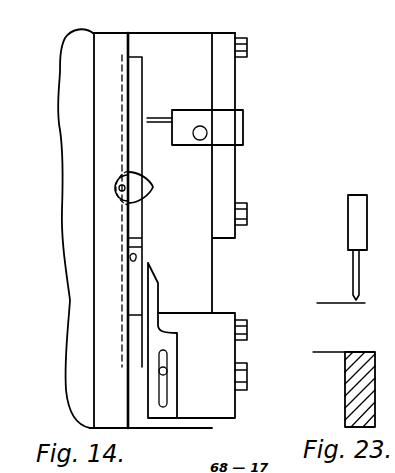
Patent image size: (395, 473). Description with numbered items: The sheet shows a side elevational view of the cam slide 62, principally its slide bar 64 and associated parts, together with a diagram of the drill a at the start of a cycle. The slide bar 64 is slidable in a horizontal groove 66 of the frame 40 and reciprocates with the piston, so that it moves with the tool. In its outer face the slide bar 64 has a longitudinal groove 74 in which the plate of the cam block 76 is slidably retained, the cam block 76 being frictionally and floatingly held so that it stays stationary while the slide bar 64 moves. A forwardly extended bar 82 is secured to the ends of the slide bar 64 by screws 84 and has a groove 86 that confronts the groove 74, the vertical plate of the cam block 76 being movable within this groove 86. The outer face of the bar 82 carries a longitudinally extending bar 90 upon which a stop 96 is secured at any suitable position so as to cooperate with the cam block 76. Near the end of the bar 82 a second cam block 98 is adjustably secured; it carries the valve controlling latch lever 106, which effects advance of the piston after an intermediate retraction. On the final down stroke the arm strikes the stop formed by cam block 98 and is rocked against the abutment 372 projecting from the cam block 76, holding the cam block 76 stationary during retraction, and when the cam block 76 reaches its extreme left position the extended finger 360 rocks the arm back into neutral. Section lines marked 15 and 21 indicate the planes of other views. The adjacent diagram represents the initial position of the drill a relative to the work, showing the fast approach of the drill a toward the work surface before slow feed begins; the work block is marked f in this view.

In FIG. 14, the frame 40 is at (88, 37).
In FIG. 14, the slide bar 64 is at (110, 62).
In FIG. 14, the forwardly extended bar 82 is at (193, 50).
In FIG. 14, the screws 84 is at (247, 43).
In FIG. 14, the longitudinal groove 74 is at (123, 98).
In FIG. 23, the longitudinal groove 74 is at (394, 143).
In FIG. 14, the groove 86 is at (137, 95).
In FIG. 14, the stop 96 is at (236, 122).
In FIG. 14, the cam slide 62 is at (238, 163).
In FIG. 14, the longitudinally extending bar 90 is at (230, 185).
In FIG. 14, the section line 15- 15 is at (163, 187).
In FIG. 14, the section line 21- 21 is at (268, 367).
In FIG. 14, the abutment 372 is at (128, 257).
In FIG. 14, the cam block 76 is at (137, 302).
In FIG. 14, the extended finger 360 is at (155, 300).
In FIG. 14, the cam block 98 is at (220, 328).
In FIG. 14, the latch lever 106 is at (250, 365).
In FIG. 23, the drill a is at (355, 267).
In FIG. 23, the workpiece f is at (344, 388).
In FIG. 23, the horizontal groove 66 is at (394, 113).